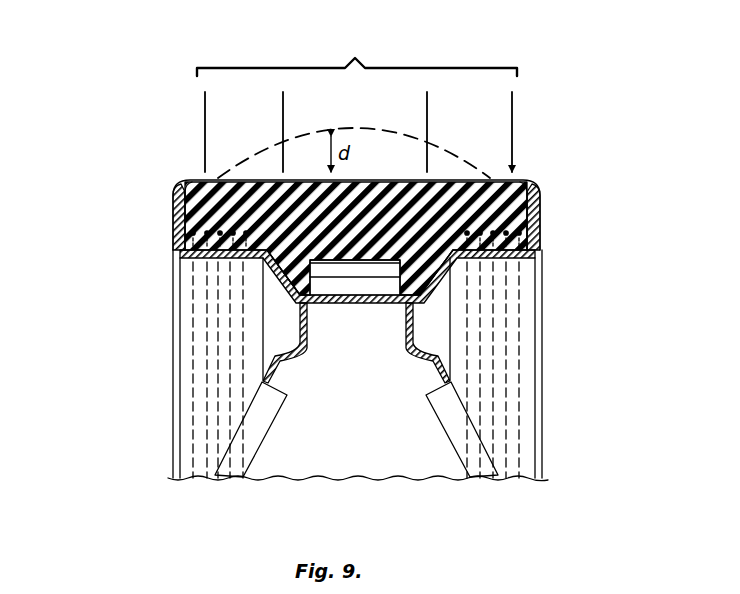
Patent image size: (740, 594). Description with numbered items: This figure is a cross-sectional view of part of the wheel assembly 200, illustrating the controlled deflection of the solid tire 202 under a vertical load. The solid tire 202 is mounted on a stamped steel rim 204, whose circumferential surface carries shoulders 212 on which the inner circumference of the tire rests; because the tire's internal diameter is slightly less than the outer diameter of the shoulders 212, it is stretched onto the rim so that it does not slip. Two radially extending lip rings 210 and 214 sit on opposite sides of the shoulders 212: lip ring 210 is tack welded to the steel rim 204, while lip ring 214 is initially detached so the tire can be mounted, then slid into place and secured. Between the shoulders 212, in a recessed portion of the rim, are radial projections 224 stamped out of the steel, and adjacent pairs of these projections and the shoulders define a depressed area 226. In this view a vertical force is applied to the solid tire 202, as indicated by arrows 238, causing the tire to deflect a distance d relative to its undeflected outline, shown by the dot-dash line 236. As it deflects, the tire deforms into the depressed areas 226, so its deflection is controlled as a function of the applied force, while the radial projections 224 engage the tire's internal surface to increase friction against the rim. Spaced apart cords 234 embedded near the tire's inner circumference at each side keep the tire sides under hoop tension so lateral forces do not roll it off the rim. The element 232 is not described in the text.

The wheel assembly 200 is at (148, 505).
The solid tire 202 is at (453, 176).
The stamped steel rim 204 is at (172, 406).
The lip ring 210 is at (176, 224).
The shoulders 212 is at (210, 260).
The lip ring 214 is at (540, 232).
The radial projections 224 is at (383, 270).
The depressed area 226 is at (282, 284).
The liner wall 232 is at (414, 322).
The cords 234 is at (236, 204).
The dot-dash line 236 is at (360, 124).
The arrows 238 is at (357, 99).